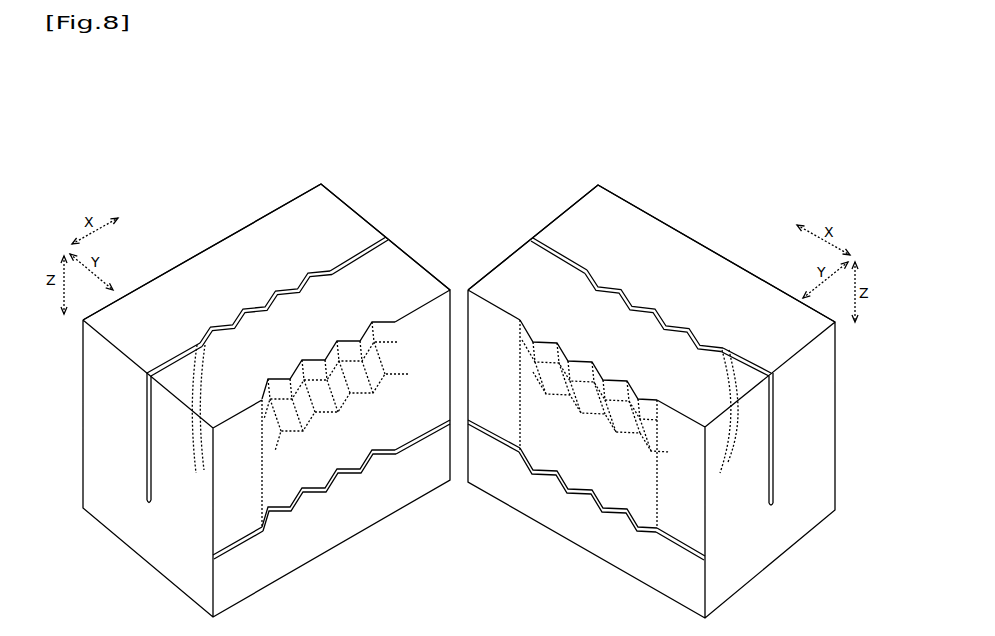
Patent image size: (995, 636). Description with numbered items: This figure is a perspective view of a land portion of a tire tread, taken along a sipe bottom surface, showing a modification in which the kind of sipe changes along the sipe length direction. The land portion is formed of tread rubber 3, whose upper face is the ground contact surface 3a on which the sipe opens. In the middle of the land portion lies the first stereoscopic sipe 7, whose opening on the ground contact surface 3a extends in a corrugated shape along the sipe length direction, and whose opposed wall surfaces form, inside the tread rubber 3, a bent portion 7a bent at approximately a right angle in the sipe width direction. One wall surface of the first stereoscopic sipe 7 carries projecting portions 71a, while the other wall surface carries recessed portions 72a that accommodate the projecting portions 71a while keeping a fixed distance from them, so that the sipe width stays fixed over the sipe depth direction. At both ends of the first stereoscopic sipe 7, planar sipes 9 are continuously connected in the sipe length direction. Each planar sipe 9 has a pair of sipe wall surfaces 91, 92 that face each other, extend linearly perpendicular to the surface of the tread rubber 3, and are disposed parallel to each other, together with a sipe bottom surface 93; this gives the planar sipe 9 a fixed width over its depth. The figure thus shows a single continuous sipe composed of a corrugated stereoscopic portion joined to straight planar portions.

The tread rubber 3 is at (806, 167).
The ground contact surface 3a is at (265, 240).
The planar sipe 9 is at (170, 353).
The first stereoscopic sipe 7 is at (261, 303).
The bent portion 7a is at (217, 407).
The projecting portions 71a is at (385, 355).
The recessed portions 72a is at (558, 436).
The sipe wall surface 91 is at (234, 523).
The sipe wall surface 92 is at (497, 414).
The sipe bottom surface 93 is at (151, 502).